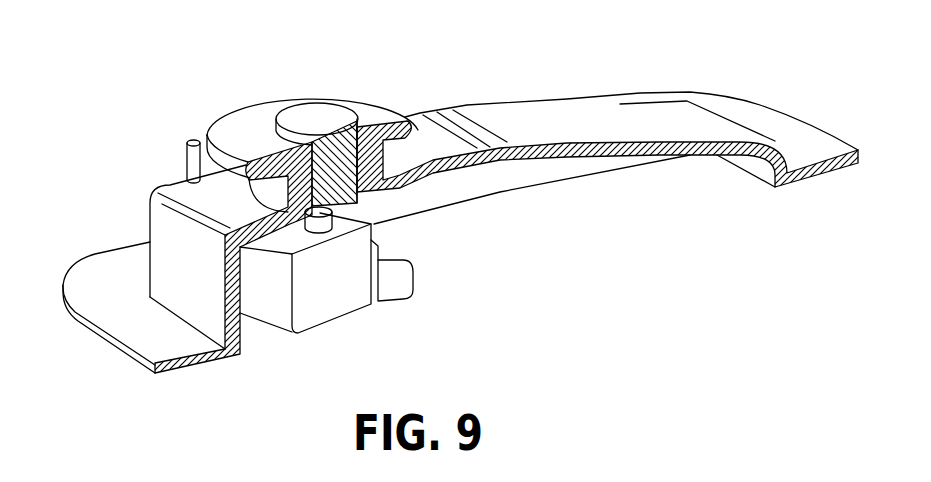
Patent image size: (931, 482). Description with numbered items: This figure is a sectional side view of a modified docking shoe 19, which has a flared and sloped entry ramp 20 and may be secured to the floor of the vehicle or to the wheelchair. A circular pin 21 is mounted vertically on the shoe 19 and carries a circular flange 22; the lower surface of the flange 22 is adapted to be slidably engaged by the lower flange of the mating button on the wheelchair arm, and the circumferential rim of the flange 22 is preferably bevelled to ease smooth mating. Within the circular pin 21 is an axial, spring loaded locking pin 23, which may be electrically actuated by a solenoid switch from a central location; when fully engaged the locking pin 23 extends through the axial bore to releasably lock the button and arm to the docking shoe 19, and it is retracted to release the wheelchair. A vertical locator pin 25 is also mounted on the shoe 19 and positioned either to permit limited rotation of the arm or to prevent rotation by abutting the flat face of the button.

The docking shoe 19 is at (467, 105).
The entry ramp 20 is at (595, 113).
The circular pin 21 is at (266, 191).
The circular flange 22 is at (250, 112).
The locking pin 23 is at (321, 115).
The vertical locator pin 25 is at (188, 167).